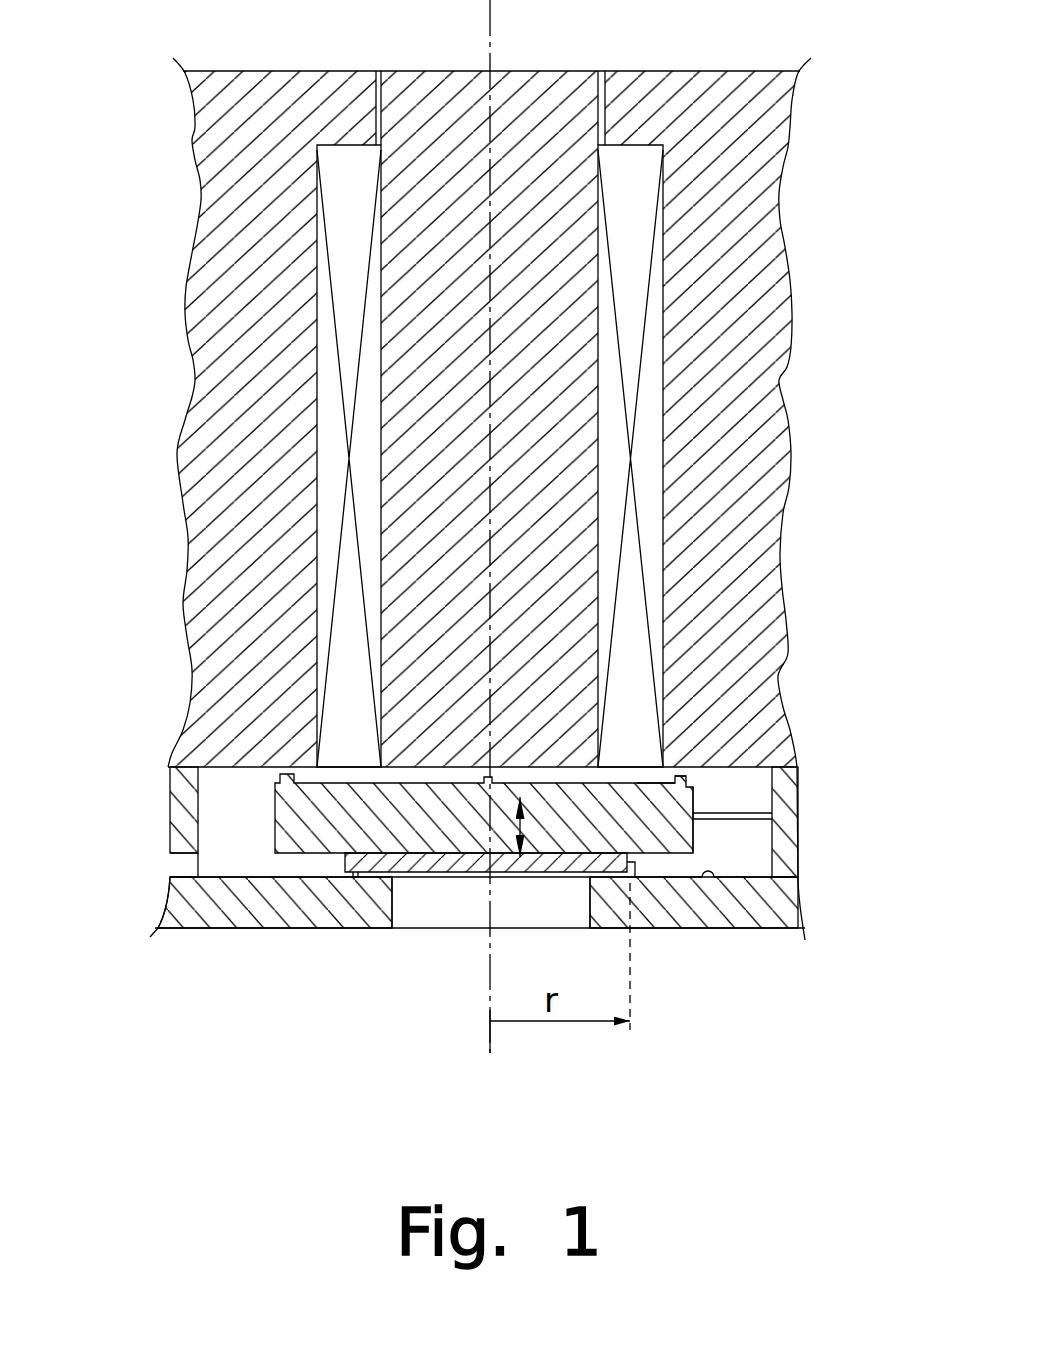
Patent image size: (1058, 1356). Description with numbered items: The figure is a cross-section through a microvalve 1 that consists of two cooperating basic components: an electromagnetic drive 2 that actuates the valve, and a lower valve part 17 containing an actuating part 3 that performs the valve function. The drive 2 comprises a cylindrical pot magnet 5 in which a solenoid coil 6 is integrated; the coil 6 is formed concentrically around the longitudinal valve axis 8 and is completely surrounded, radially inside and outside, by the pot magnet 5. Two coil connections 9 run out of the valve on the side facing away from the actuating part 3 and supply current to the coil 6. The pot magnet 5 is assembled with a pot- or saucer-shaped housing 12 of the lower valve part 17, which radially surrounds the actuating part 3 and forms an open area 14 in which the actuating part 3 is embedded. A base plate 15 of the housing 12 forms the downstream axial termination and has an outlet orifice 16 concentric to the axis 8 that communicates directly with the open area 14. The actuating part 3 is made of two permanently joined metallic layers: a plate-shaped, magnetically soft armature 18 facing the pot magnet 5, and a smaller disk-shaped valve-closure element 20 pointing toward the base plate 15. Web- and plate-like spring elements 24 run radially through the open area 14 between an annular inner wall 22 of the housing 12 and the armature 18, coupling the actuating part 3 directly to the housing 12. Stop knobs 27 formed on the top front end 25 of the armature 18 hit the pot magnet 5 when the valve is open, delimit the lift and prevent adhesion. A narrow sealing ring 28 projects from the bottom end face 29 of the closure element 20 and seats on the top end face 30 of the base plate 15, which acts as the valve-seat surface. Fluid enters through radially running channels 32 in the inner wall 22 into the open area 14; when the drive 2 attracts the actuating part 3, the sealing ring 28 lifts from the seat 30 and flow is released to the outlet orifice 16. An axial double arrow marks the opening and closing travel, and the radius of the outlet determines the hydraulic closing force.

The microvalve 1 is at (172, 666).
The electromagnetic drive 2 is at (806, 372).
The actuating part 3 is at (275, 818).
The pot magnet 5 is at (770, 563).
The solenoid coil 6 is at (635, 152).
The longitudinal valve axis 8 is at (488, 968).
The coil connections 9 is at (380, 72).
The housing 12 is at (672, 914).
The open area 14 is at (245, 845).
The base plate 15 is at (183, 918).
The outlet orifice 16 is at (565, 912).
The lower valve part 17 is at (812, 911).
The armature 18 is at (677, 804).
The valve-closure element 20 is at (447, 863).
The inner wall 22 is at (787, 863).
The spring elements 24 is at (745, 823).
The top front end 25 is at (637, 787).
The stop knobs 27 is at (680, 780).
The sealing ring 28 is at (353, 872).
The bottom end face 29 is at (521, 870).
The top end face 30 is at (712, 880).
The channels 32 is at (198, 864).